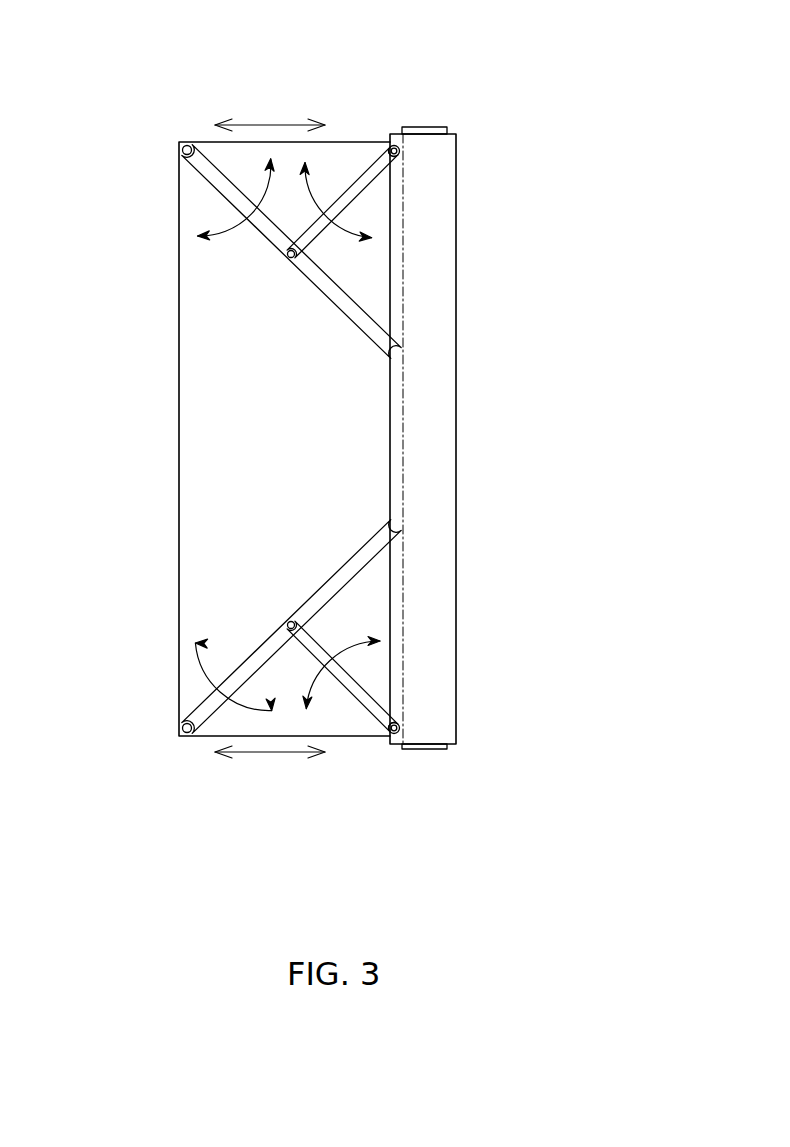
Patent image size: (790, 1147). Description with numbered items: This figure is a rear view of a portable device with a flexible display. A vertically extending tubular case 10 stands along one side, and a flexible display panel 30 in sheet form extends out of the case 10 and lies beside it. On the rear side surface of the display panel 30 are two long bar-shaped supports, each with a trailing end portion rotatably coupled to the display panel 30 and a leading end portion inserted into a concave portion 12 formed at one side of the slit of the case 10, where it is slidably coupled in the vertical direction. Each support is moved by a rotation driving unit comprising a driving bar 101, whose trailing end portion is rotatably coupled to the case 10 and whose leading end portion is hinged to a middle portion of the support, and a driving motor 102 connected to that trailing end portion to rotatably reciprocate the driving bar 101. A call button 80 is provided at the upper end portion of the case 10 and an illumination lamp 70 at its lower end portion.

The case 10 is at (457, 297).
The concave portion 12 is at (402, 472).
The display panel 30 is at (198, 494).
The illumination lamp 70 is at (425, 750).
The call button 80 is at (423, 126).
The driving bar 101 is at (357, 178).
The driving motor 102 is at (391, 79).